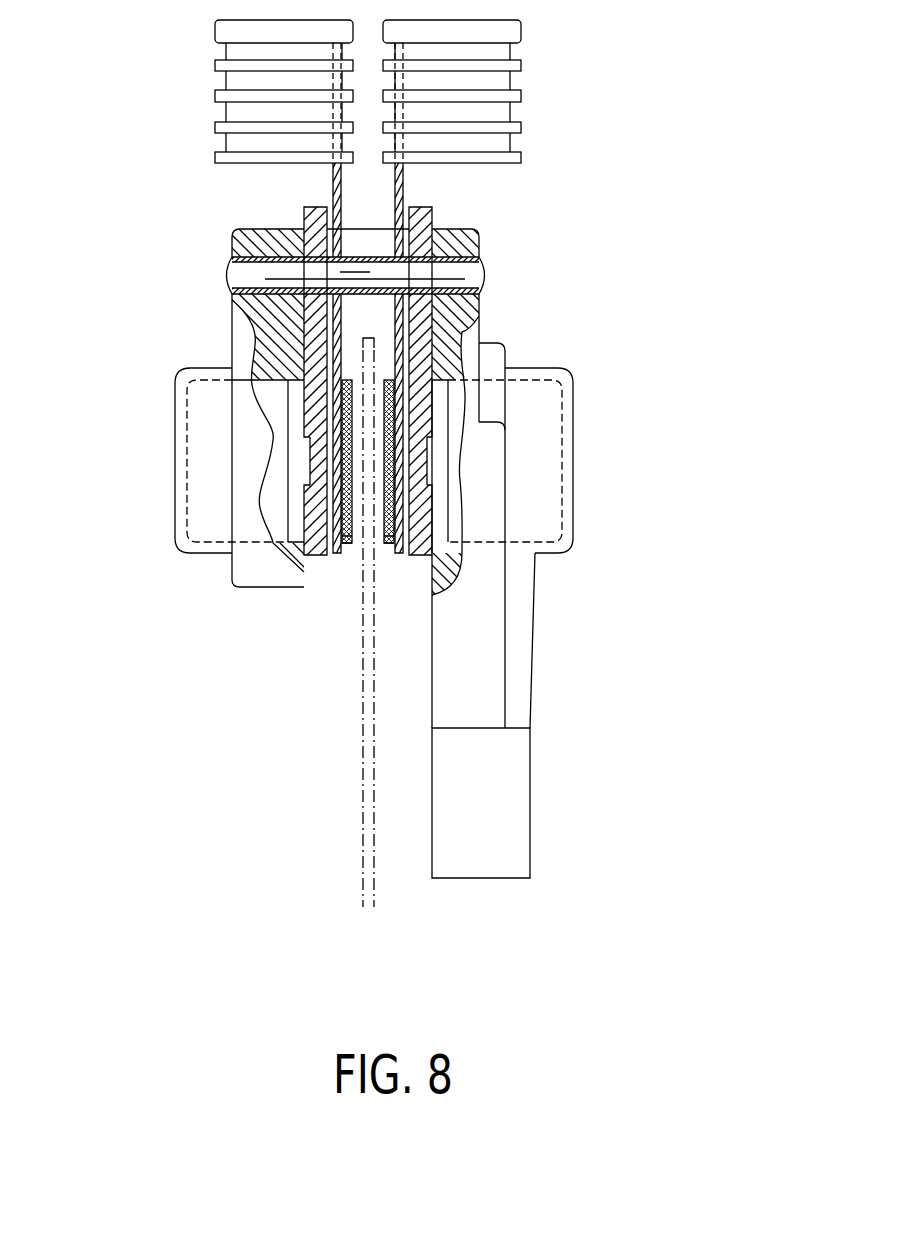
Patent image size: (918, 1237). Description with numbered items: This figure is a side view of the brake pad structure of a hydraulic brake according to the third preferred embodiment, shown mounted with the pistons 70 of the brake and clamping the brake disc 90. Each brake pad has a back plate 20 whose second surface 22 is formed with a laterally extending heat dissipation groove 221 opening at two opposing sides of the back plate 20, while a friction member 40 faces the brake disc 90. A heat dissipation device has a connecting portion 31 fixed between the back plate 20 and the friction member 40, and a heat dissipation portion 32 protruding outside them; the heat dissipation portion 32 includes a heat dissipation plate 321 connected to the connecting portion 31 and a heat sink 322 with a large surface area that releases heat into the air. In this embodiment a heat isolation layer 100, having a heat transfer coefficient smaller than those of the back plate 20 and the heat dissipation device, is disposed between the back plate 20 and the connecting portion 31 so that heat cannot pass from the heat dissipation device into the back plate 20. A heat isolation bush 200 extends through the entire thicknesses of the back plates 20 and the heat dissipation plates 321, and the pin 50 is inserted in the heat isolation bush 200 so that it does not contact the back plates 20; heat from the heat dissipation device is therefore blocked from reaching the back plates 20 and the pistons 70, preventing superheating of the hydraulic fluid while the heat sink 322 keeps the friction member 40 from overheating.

The back plate 20 is at (428, 207).
The second surface 22 is at (443, 385).
The heat dissipation groove 221 is at (428, 460).
The connecting portion 31 is at (337, 447).
The heat dissipation portion 32 is at (105, 80).
The heat dissipation plate 321 is at (335, 185).
The heat sink 322 is at (225, 100).
The friction member 40 is at (343, 545).
The pin 50 is at (258, 270).
The piston 70 is at (455, 523).
The brake disc 90 is at (363, 786).
The heat isolation layer 100 is at (327, 412).
The heat isolation bush 200 is at (257, 280).